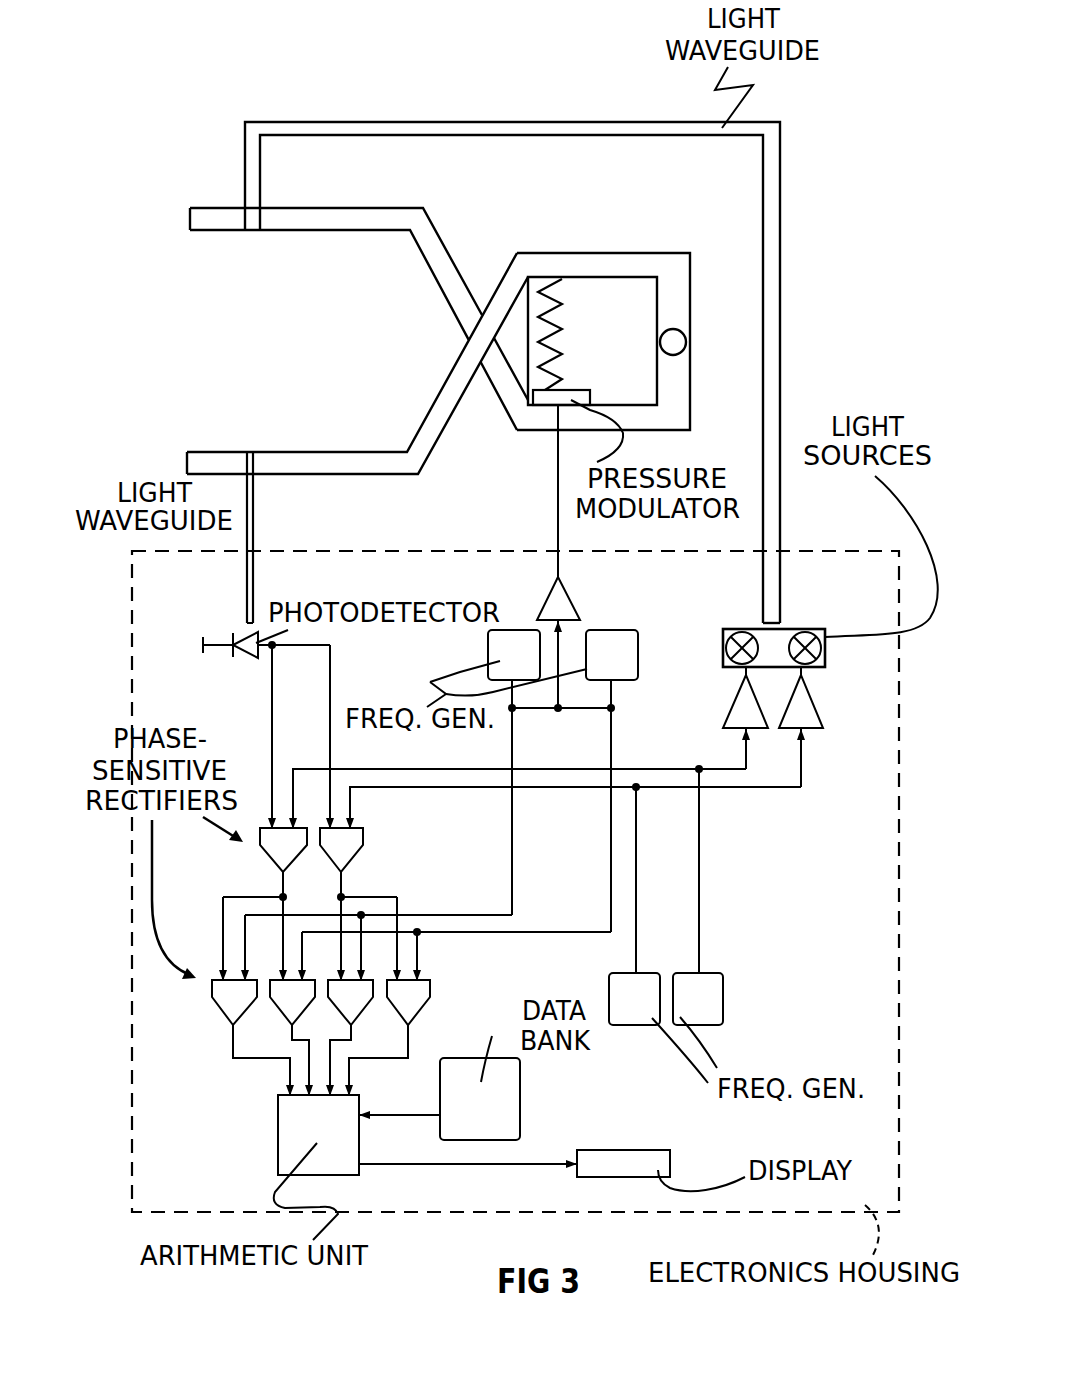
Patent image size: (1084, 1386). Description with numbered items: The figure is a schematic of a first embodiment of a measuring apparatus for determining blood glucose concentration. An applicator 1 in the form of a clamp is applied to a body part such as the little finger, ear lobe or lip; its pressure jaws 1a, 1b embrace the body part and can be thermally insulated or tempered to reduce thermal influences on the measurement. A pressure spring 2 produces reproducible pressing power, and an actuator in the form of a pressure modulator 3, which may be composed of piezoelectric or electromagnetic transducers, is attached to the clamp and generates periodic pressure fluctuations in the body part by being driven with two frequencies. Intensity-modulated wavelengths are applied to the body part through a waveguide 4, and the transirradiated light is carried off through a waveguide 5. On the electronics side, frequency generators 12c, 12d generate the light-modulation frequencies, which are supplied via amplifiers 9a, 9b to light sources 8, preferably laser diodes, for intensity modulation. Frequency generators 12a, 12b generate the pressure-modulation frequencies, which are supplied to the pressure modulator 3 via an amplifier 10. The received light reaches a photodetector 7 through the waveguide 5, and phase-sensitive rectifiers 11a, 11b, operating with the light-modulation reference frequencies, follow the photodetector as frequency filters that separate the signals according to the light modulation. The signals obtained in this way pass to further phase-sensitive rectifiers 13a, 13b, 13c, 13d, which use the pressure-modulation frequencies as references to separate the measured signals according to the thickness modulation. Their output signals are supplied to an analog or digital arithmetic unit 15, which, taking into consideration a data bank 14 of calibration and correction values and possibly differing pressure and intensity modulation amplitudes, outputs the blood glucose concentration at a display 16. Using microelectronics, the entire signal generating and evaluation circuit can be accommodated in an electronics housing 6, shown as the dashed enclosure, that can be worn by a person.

The applicator 1 is at (441, 248).
The pressure jaw 1a is at (308, 218).
The pressure jaw 1b is at (335, 462).
The pressure spring 2 is at (555, 321).
The pressure modulator 3 is at (570, 393).
The waveguide 4 is at (772, 363).
The waveguide 5 is at (257, 520).
The electronics housing 6 is at (817, 550).
The photodetector 7 is at (247, 665).
The light sources 8 is at (727, 645).
The amplifier 9a is at (727, 708).
The amplifier 9b is at (823, 703).
The amplifier 10 is at (540, 598).
The phase-sensitive rectifier 11a is at (262, 852).
The phase-sensitive rectifier 11b is at (363, 856).
The frequency generator 12a is at (488, 657).
The frequency generator 12b is at (617, 630).
The frequency generator 12c is at (632, 1025).
The frequency generator 12d is at (723, 1006).
The phase-sensitive rectifier 13a is at (217, 1010).
The phase-sensitive rectifier 13b is at (280, 1012).
The phase-sensitive rectifier 13c is at (357, 1017).
The phase-sensitive rectifier 13d is at (428, 1008).
The data bank 14 is at (520, 1110).
The arithmetic unit 15 is at (278, 1140).
The display 16 is at (670, 1160).